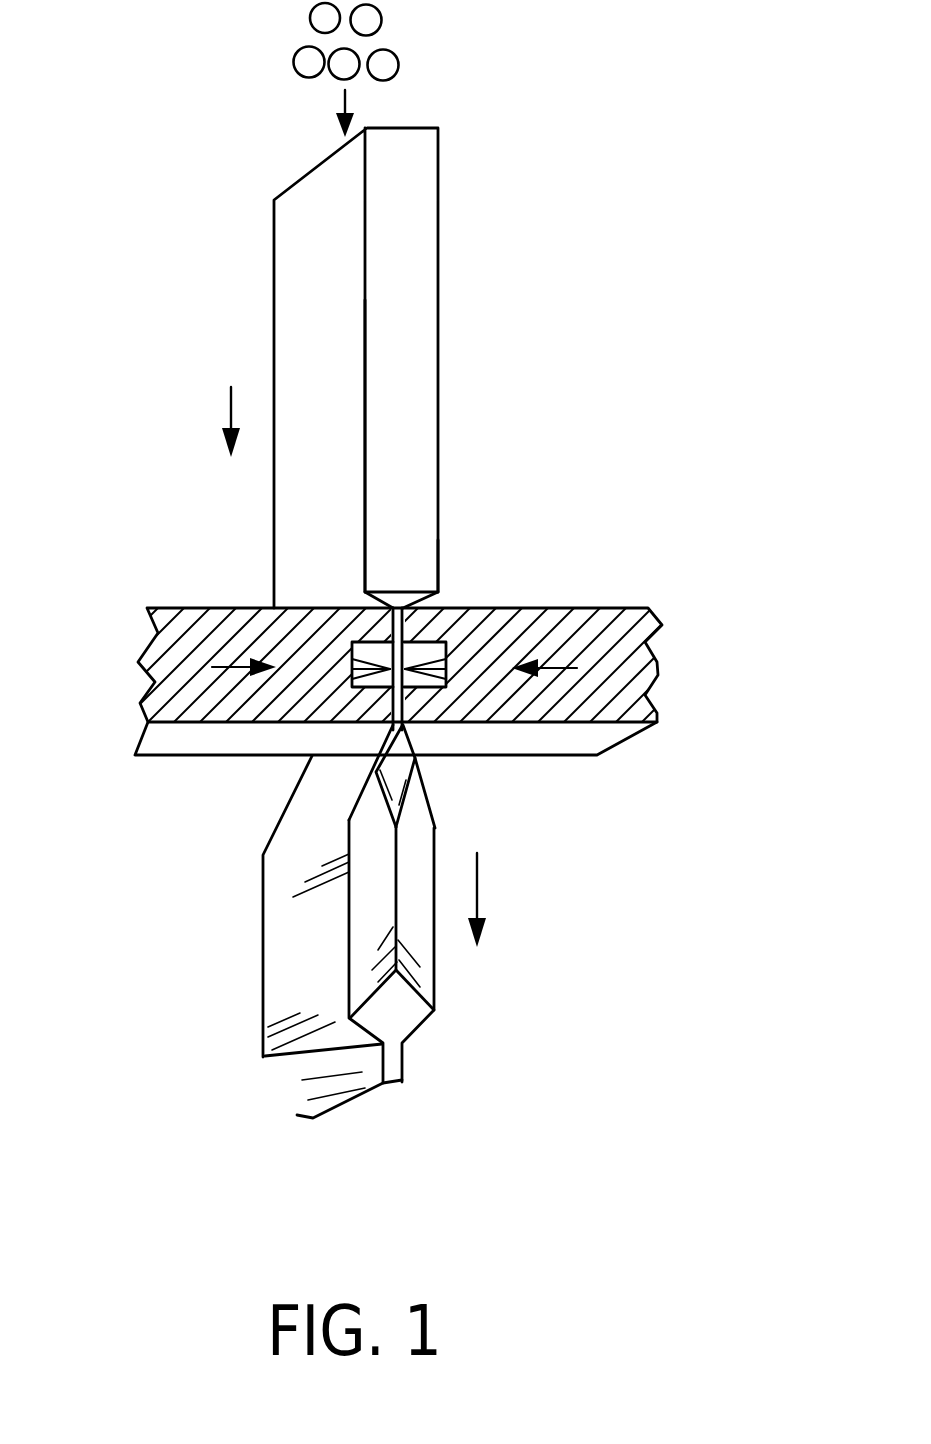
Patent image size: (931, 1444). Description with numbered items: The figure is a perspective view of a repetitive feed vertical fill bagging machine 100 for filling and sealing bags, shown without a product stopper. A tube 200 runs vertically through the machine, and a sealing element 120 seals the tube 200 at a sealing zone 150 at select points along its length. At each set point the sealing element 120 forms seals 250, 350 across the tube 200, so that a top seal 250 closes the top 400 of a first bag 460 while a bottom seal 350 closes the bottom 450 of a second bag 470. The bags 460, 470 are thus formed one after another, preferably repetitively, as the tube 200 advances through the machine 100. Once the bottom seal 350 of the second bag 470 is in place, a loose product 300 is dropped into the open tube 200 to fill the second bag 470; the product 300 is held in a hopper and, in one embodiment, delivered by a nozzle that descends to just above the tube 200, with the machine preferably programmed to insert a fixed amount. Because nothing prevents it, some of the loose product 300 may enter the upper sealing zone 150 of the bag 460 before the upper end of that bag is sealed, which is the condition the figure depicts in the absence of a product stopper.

The repetitive feed vertical fill bagging machine 100 is at (783, 822).
The sealing element 120 is at (410, 636).
The sealing zone 150 is at (388, 712).
The tube 200 is at (420, 167).
The top seal 250 is at (412, 693).
The loose product 300 is at (400, 38).
The bottom seal 350 is at (398, 632).
The top 400 is at (420, 240).
The bottom 450 is at (437, 562).
The first bag 460 is at (412, 935).
The second bag 470 is at (403, 512).